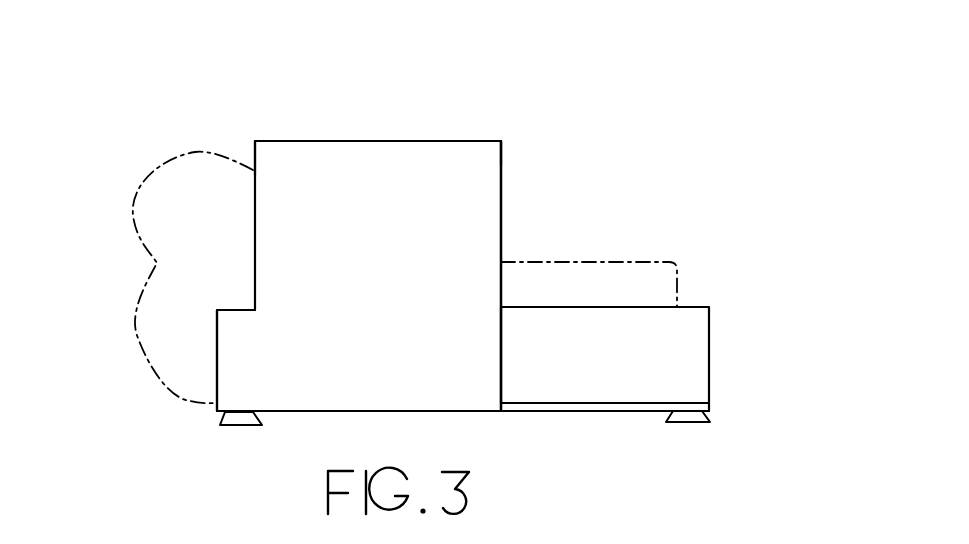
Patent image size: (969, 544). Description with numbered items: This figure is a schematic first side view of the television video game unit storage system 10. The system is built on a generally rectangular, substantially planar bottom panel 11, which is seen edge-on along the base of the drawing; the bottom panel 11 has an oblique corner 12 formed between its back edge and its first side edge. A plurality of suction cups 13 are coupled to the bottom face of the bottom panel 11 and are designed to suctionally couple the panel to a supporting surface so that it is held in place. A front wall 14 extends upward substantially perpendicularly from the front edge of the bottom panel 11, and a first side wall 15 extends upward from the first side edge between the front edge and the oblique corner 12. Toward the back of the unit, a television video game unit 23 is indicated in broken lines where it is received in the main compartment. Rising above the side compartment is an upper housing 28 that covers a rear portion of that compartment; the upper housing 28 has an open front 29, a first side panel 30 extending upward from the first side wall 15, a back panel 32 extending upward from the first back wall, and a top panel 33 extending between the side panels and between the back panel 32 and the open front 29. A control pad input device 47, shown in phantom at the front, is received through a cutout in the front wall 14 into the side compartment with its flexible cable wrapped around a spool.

The television video game unit storage system 10 is at (650, 125).
The bottom panel 11 is at (520, 412).
The oblique corner 12 is at (622, 403).
The suction cups 13 is at (253, 425).
The front wall 14 is at (217, 363).
The first side wall 15 is at (710, 328).
The television video game unit 23 is at (677, 260).
The upper housing 28 is at (503, 140).
The open front 29 is at (253, 163).
The first side panel 30 is at (342, 155).
The back panel 32 is at (503, 205).
The top panel 33 is at (413, 141).
The control pad input device 47 is at (157, 262).